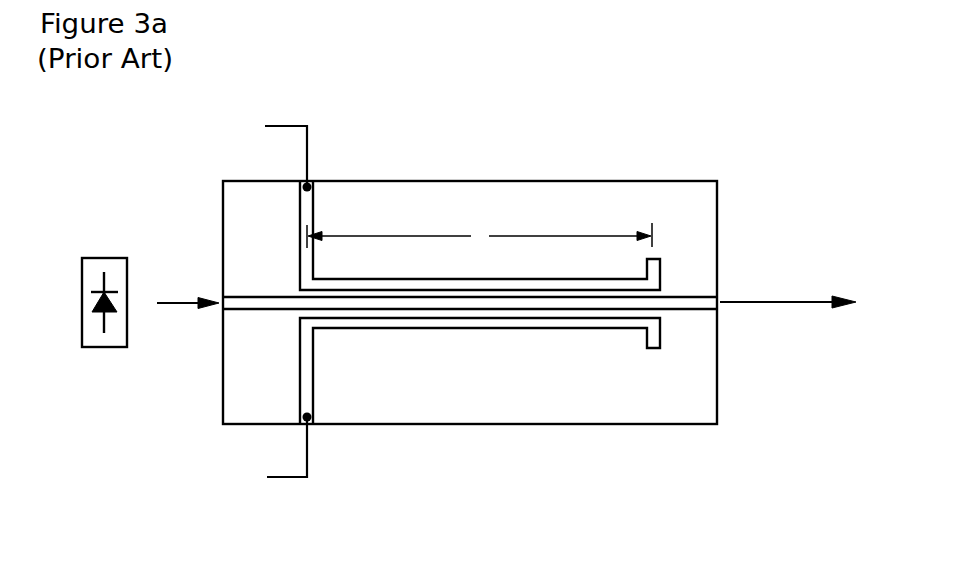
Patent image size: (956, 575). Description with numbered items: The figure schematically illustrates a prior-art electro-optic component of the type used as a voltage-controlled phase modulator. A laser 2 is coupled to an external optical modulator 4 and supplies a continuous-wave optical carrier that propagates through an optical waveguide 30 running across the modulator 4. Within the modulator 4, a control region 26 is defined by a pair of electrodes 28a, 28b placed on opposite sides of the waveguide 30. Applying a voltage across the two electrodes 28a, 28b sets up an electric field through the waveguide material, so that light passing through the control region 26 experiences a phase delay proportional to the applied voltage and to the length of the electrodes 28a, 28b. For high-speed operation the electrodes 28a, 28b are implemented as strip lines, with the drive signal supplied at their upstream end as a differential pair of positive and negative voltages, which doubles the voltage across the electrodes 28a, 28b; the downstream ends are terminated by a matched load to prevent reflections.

The laser 2 is at (110, 258).
The optical modulator 4 is at (703, 181).
The control region 26 is at (434, 303).
The electrode 28a is at (511, 284).
The electrode 28b is at (504, 322).
The optical waveguide 30 is at (287, 300).